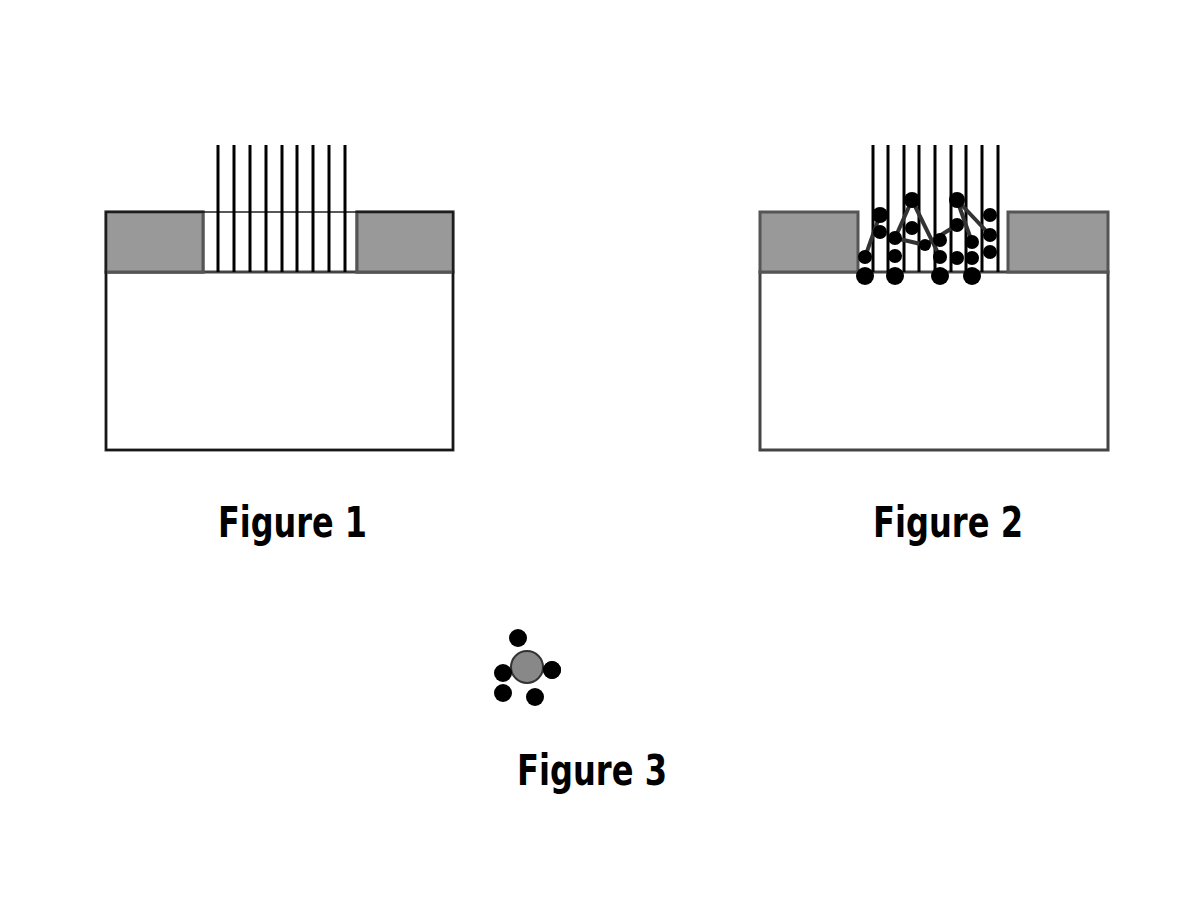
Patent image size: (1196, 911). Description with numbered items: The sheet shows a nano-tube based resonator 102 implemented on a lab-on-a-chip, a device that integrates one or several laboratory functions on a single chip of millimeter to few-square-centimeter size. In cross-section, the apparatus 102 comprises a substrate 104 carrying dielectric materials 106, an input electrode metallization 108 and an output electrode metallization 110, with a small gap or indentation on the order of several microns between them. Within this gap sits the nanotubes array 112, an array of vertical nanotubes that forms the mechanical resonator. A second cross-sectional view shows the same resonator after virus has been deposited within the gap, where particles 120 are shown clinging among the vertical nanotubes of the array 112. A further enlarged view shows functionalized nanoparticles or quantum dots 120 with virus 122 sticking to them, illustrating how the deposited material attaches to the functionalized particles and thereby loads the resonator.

In FIG. 1, the nano-tube based resonator 102 is at (477, 336).
In FIG. 1, the substrate 104 is at (87, 383).
In FIG. 1, the dielectric materials 106 is at (92, 252).
In FIG. 1, the input electrode metallization 108 is at (175, 197).
In FIG. 1, the output electrode metallization 110 is at (373, 200).
In FIG. 1, the nanotubes array 112 is at (346, 118).
In FIG. 2, the nanoparticle cluster 120 is at (1013, 212).
In FIG. 3, the nanoparticle cluster 120 is at (548, 644).
In FIG. 3, the satellite nanoparticle 122 is at (576, 674).